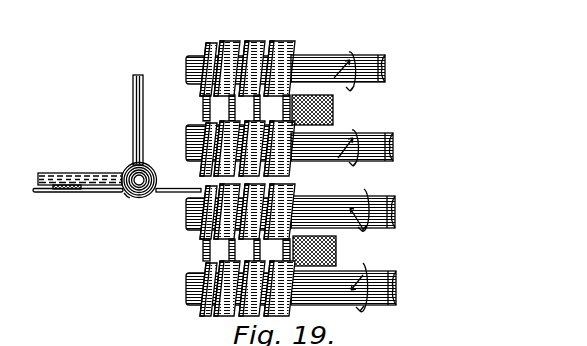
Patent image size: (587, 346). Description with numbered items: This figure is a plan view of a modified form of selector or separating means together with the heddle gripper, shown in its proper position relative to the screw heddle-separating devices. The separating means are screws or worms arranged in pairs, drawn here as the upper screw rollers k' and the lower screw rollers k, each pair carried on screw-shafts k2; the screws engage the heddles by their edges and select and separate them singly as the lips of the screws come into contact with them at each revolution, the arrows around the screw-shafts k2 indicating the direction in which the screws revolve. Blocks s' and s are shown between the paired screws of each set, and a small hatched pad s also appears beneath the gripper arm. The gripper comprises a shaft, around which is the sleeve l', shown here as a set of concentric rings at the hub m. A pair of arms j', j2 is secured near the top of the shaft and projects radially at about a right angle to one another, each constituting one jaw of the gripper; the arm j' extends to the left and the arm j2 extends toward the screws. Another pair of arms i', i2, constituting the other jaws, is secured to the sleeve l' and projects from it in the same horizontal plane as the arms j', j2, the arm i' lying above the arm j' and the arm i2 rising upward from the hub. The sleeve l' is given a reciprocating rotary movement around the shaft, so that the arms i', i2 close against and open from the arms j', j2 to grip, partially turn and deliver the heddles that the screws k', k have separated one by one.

The arm i2 is at (137, 91).
The sleeve l' is at (130, 169).
The arm i' is at (80, 167).
The friction pad s is at (207, 225).
The arm j' is at (78, 205).
The arm j2 is at (171, 181).
The pivot m is at (121, 189).
The feed roller k' is at (226, 92).
The friction block s' is at (275, 110).
The roller shaft k2 is at (379, 57).
The feed roller k is at (224, 261).